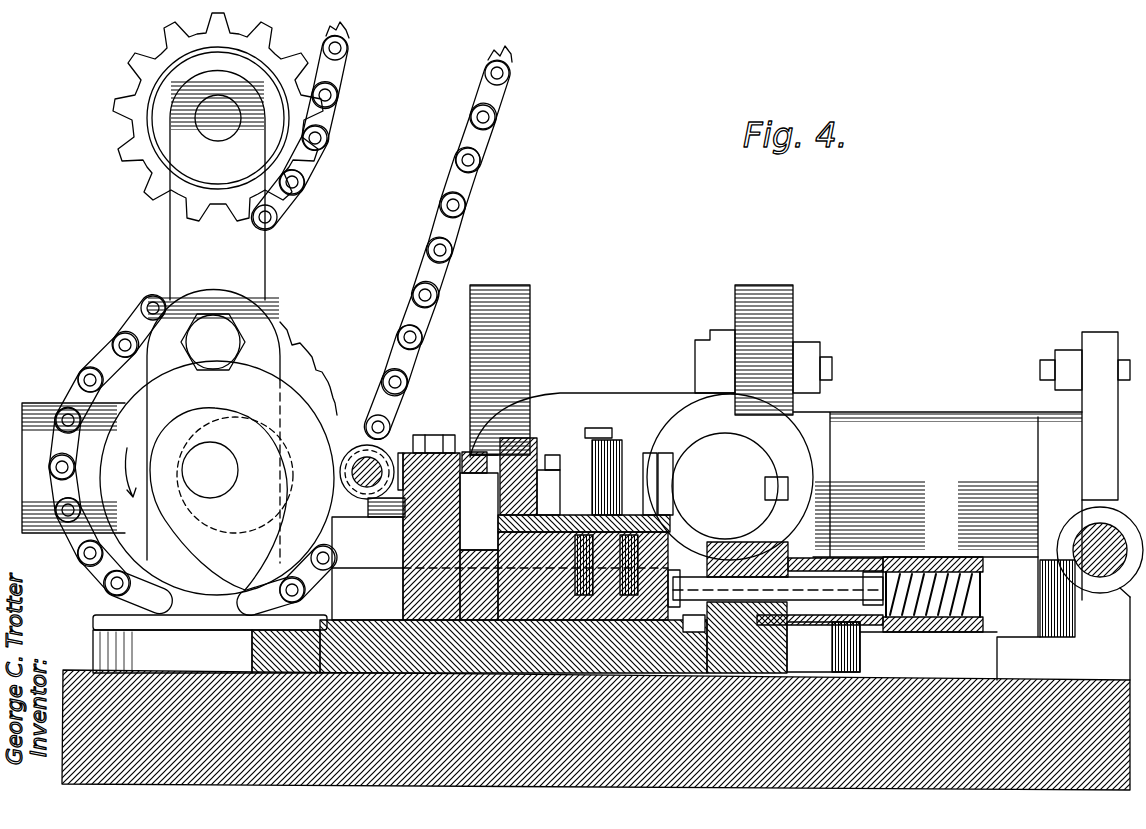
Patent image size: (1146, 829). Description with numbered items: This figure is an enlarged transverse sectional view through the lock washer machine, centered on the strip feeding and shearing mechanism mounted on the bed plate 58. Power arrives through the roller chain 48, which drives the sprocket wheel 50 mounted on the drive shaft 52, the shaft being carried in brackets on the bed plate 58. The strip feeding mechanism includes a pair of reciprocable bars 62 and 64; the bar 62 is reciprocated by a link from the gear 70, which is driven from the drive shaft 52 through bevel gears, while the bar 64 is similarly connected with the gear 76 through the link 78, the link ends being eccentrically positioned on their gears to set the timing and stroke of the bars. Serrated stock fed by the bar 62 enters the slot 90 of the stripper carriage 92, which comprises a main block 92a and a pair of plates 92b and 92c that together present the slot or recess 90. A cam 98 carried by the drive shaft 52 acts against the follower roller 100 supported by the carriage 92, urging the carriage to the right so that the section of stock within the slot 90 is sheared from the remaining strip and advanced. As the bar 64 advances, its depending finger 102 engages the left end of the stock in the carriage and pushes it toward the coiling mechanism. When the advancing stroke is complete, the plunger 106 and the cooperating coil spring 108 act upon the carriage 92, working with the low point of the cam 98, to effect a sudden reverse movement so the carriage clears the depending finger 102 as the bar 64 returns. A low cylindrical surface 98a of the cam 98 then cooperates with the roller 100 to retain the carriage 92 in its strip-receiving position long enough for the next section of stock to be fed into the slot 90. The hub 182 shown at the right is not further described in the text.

The chain 48 is at (475, 163).
The sprocket wheel 50 is at (290, 367).
The drive shaft 52 is at (221, 499).
The bed plate 58 is at (87, 690).
The reciprocable bar 62 is at (545, 437).
The reciprocable bar 64 is at (730, 477).
The gear 70 is at (530, 298).
The gear 76 is at (783, 313).
The link 78 is at (720, 383).
The slot 90 is at (657, 517).
The stripper carriage 92 is at (396, 533).
The main block 92a is at (513, 463).
The plate 92b is at (593, 513).
The plate 92c is at (670, 543).
The cam 98 is at (310, 398).
The low cylindrical surface 98a is at (150, 450).
The follower roller 100 is at (363, 487).
The depending finger 102 is at (652, 485).
The plunger 106 is at (775, 591).
The spring 108 is at (917, 613).
The hub 182 is at (1093, 545).